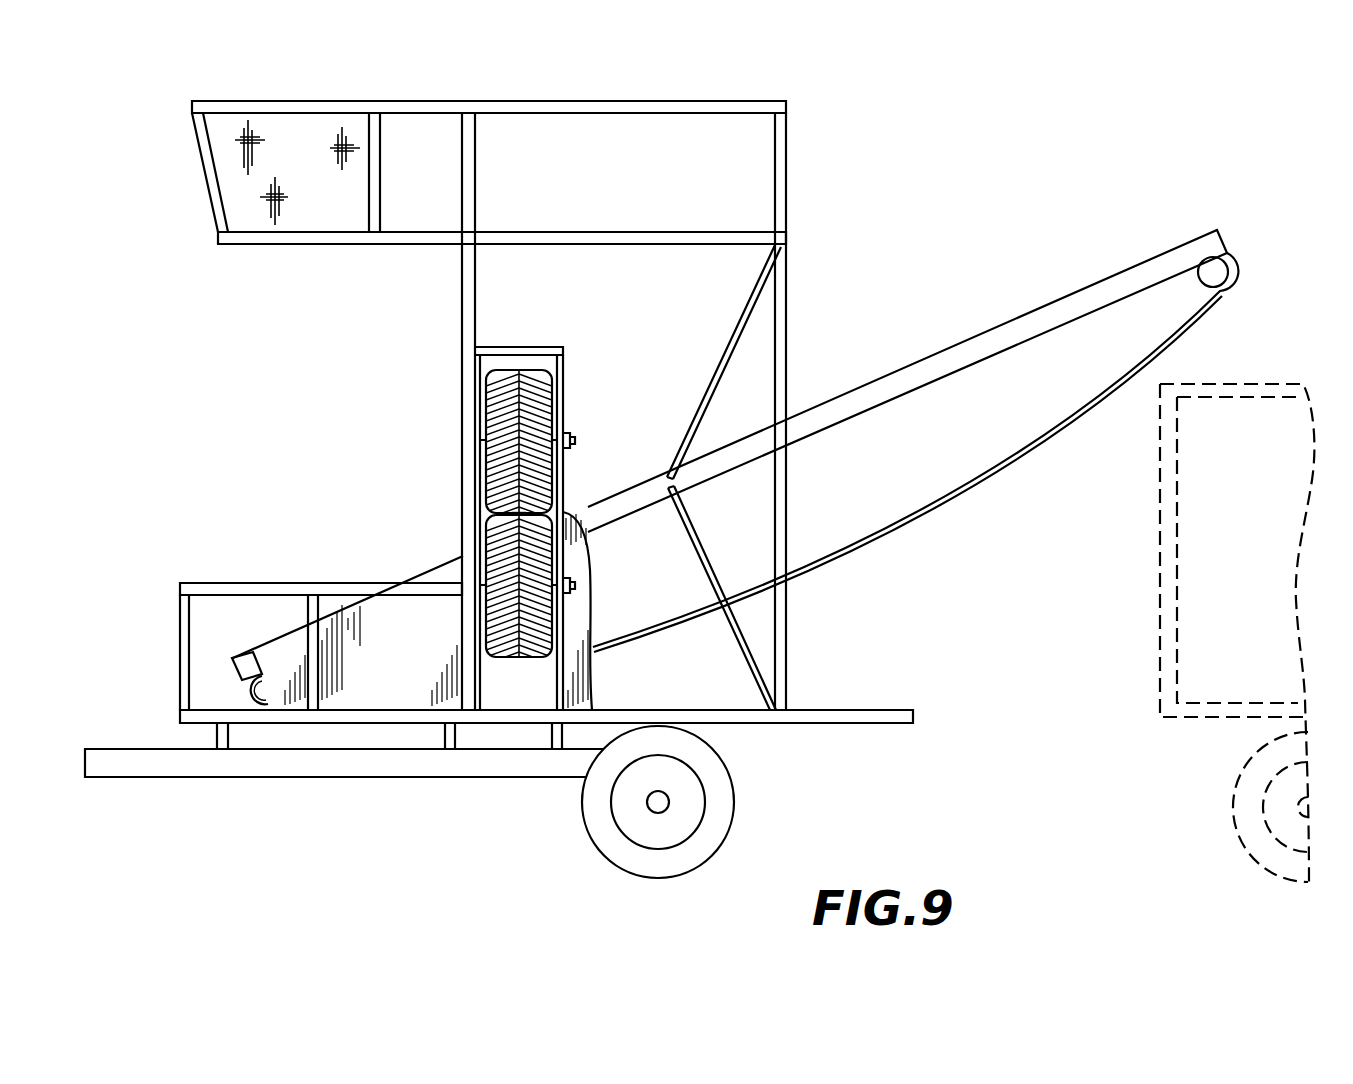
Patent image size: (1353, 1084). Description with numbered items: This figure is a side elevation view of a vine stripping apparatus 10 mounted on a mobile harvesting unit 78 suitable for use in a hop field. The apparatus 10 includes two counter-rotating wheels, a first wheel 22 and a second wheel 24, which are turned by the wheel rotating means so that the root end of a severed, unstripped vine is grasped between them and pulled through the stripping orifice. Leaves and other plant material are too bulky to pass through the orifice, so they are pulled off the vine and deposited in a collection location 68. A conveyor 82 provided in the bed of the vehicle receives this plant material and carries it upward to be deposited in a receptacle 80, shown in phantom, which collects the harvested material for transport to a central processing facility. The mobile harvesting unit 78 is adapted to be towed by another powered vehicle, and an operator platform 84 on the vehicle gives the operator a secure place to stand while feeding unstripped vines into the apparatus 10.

The vine stripping apparatus 10 is at (579, 330).
The first wheel 22 is at (492, 397).
The second wheel 24 is at (495, 535).
The collection location 68 is at (650, 473).
The mobile harvesting unit 78 is at (848, 172).
The receptacle 80 is at (1196, 563).
The conveyor 82 is at (1045, 318).
The operator platform 84 is at (214, 710).